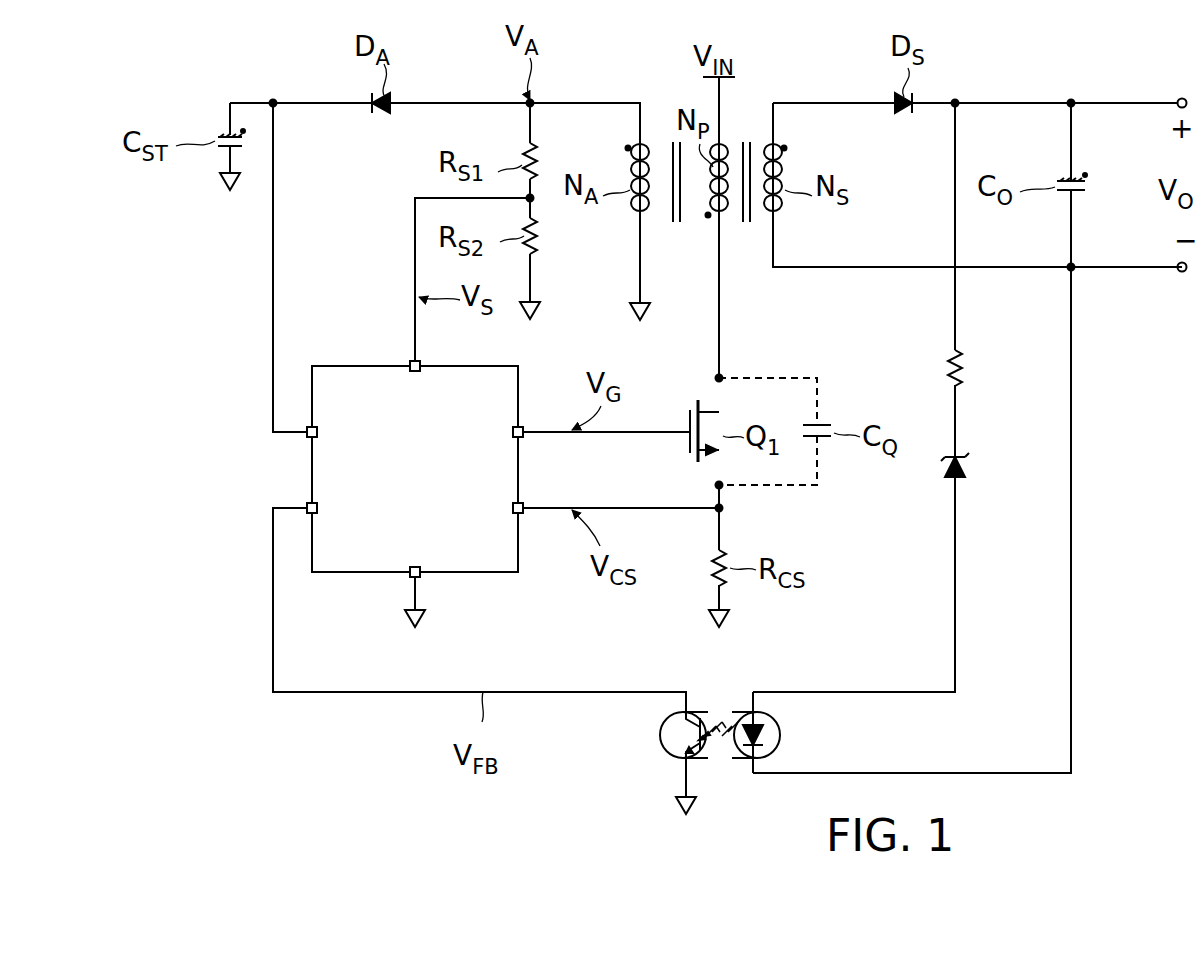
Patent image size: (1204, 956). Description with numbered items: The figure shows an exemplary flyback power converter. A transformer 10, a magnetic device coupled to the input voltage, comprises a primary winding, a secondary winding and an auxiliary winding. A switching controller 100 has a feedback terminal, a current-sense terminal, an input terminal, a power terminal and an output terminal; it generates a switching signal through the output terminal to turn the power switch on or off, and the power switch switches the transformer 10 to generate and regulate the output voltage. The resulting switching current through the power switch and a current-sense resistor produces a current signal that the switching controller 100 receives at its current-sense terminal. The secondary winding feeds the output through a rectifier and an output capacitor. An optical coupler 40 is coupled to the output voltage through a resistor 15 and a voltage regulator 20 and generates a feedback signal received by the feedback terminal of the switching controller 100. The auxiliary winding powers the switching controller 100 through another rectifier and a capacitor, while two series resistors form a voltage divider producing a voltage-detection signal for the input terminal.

The transformer 10 is at (748, 103).
The switching controller 100 is at (359, 365).
The resistor 15 is at (948, 372).
The voltage regulator 20 is at (968, 468).
The optical coupler 40 is at (719, 760).